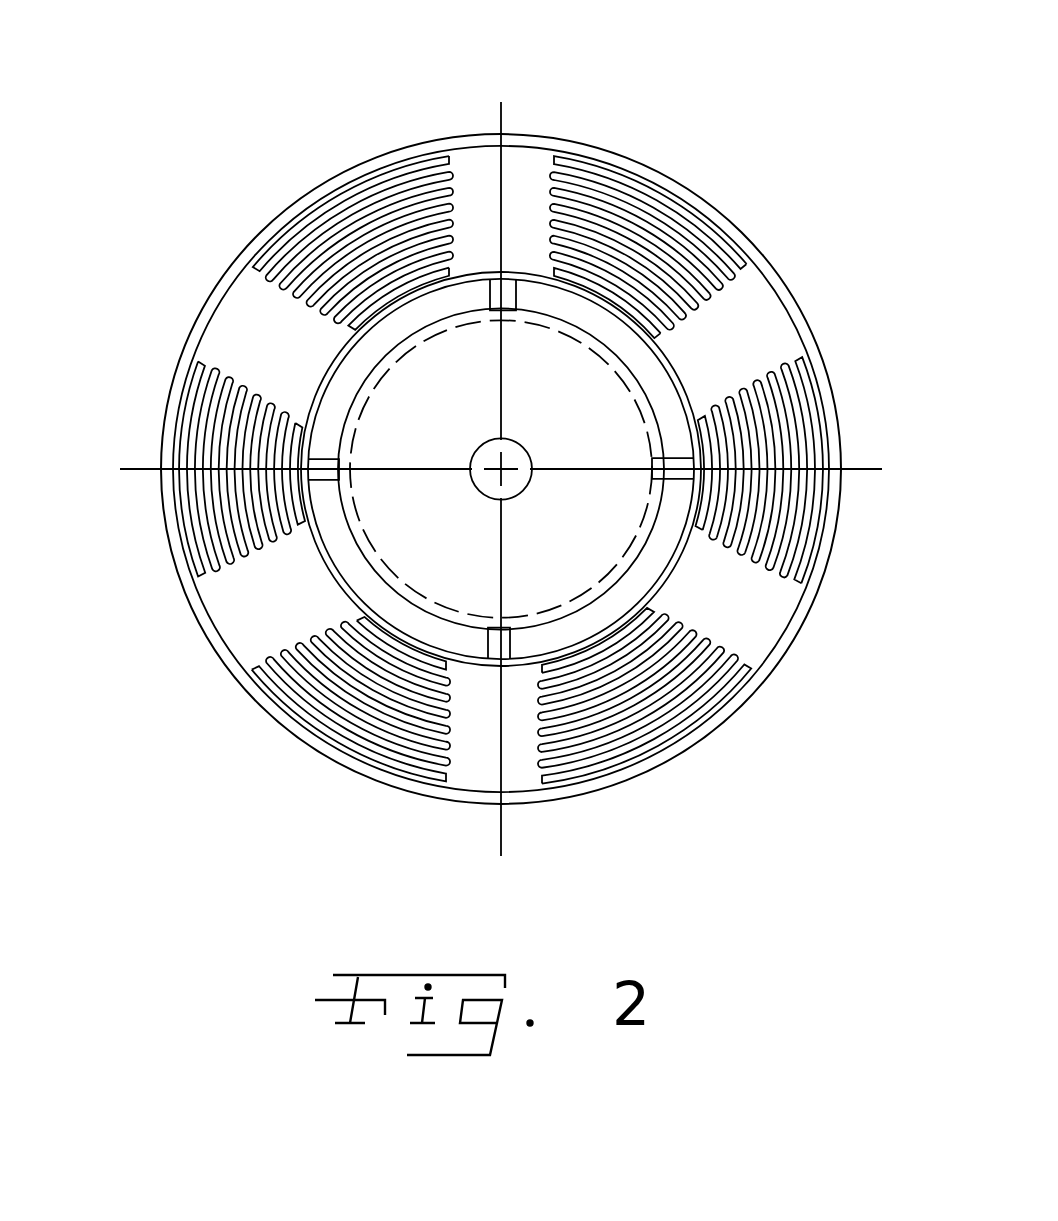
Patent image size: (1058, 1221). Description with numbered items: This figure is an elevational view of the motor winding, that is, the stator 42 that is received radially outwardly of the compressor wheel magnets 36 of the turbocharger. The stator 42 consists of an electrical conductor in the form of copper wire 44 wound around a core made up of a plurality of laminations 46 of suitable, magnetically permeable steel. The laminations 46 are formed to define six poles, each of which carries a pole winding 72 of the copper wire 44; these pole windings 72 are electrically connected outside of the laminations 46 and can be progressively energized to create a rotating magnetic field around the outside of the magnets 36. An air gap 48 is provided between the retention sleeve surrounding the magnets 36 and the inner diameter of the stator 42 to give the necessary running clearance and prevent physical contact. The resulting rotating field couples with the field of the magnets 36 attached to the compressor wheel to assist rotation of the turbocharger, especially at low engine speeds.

The magnets 36 is at (398, 327).
The stator winding 42 is at (777, 140).
The copper wire 44 is at (643, 708).
The laminations 46 is at (837, 535).
The air gap 48 is at (543, 264).
The pole winding 72 is at (370, 224).